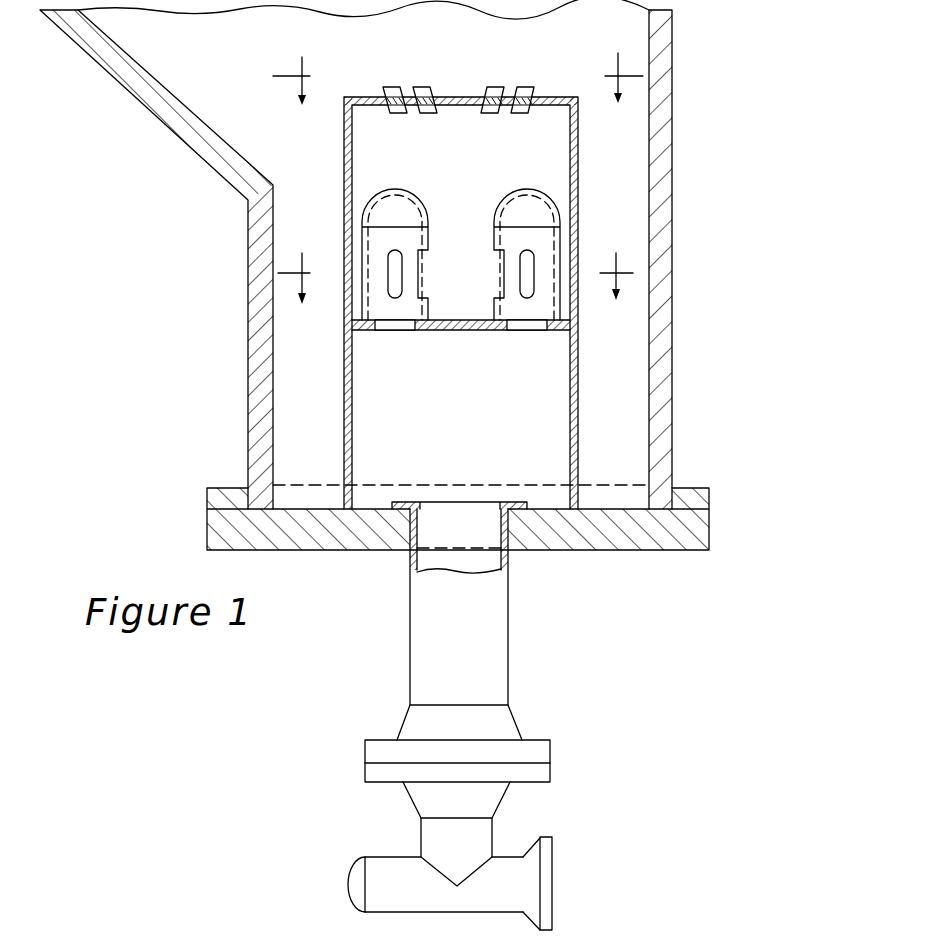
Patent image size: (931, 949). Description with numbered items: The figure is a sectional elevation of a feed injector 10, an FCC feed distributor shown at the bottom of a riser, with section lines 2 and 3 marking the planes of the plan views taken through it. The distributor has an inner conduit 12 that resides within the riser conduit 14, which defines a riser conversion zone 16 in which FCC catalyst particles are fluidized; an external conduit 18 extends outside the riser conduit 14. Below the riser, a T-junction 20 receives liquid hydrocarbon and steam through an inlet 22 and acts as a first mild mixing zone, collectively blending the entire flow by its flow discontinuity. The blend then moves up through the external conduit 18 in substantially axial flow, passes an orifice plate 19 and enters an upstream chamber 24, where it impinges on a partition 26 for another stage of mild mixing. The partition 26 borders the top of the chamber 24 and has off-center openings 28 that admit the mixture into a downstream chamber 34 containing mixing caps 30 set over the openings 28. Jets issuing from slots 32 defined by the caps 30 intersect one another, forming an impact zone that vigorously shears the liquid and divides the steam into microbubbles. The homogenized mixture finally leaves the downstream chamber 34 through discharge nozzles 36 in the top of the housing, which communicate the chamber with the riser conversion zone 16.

The section line 2- 2 is at (455, 277).
The section line 3- 3 is at (458, 77).
The feed injector 10 is at (583, 167).
The inner conduit 12 is at (345, 418).
The riser conduit 14 is at (673, 205).
The riser conversion zone 16 is at (470, 50).
The external conduit 18 is at (408, 628).
The orifice plate 19 is at (503, 502).
The T-junction 20 is at (420, 837).
The inlet 22 is at (552, 850).
The upstream chamber 24 is at (472, 451).
The partition 26 is at (455, 333).
The openings 28 is at (392, 333).
The mixing caps 30 is at (405, 187).
The slots 32 is at (521, 277).
The downstream chamber 34 is at (472, 194).
The discharge nozzles 36 is at (515, 113).